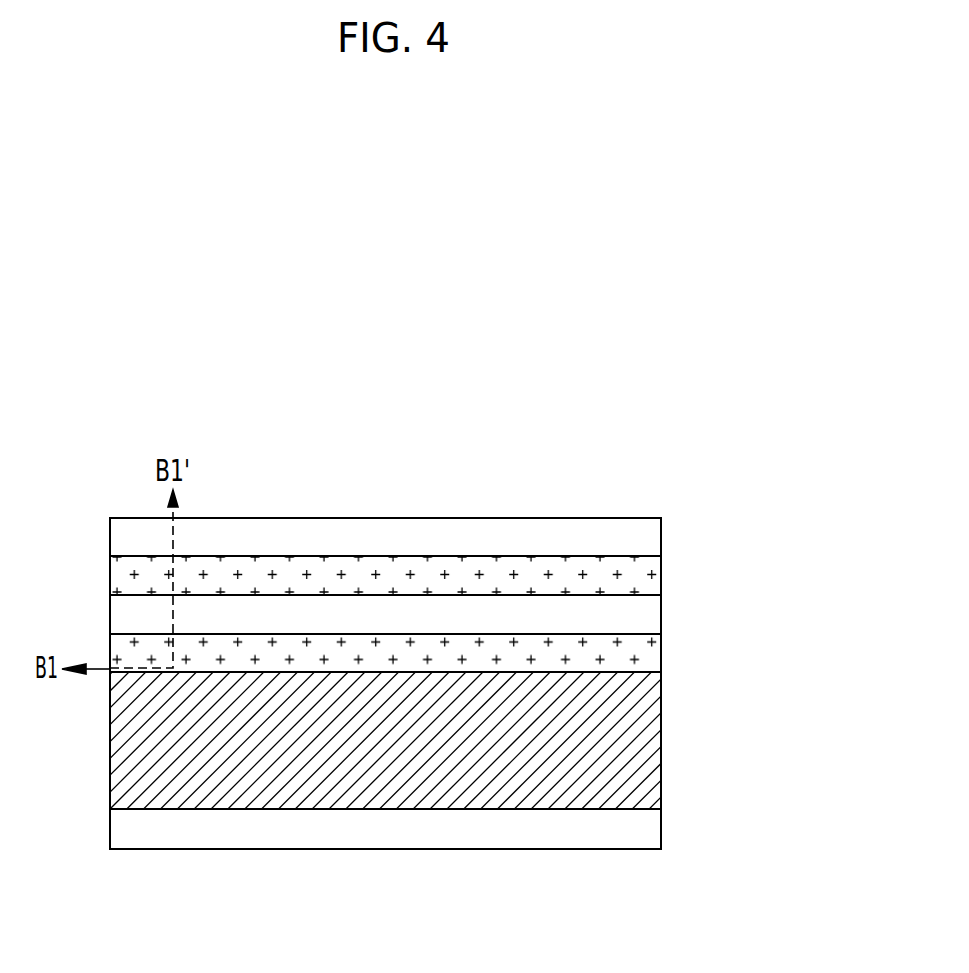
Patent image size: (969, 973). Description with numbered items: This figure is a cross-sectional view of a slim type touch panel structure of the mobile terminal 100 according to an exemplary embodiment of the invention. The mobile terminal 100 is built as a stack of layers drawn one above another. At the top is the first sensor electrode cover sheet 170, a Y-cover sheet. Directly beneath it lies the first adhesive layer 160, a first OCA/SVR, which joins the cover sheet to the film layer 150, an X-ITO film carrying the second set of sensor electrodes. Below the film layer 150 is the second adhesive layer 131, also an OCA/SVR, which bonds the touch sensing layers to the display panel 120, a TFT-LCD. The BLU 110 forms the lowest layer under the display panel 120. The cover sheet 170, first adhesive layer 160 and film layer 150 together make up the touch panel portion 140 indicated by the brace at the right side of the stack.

The mobile terminal 100 is at (757, 456).
The BLU 110 is at (661, 828).
The display panel 120 is at (661, 745).
The second adhesive layer 131 is at (661, 650).
The touch panel 140 is at (465, 576).
The film layer 150 is at (661, 610).
The first adhesive layer 160 is at (661, 570).
The first sensor electrode cover sheet 170 is at (661, 534).